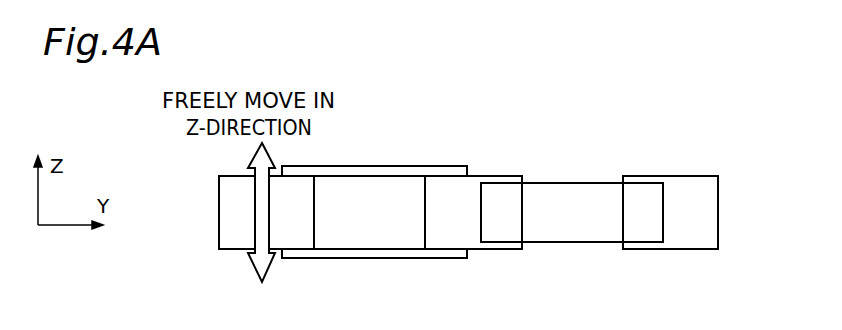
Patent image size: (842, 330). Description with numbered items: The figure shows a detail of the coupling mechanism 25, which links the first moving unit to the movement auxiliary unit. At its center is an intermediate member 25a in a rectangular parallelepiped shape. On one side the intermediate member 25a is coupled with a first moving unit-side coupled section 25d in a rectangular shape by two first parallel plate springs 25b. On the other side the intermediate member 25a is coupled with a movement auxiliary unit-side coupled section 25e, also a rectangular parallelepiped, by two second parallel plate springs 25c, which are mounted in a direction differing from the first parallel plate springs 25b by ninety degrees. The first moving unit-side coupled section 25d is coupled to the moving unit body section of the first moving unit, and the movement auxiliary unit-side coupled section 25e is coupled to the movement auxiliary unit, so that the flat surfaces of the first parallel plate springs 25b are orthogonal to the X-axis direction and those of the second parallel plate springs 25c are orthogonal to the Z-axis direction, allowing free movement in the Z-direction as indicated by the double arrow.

The coupling mechanism 25 is at (462, 182).
The intermediate member 25a is at (452, 233).
The first parallel plate springs 25b is at (590, 227).
The second parallel plate springs 25c is at (390, 240).
The first moving unit-side coupled section 25d is at (688, 203).
The movement auxiliary unit-side coupled section 25e is at (233, 230).